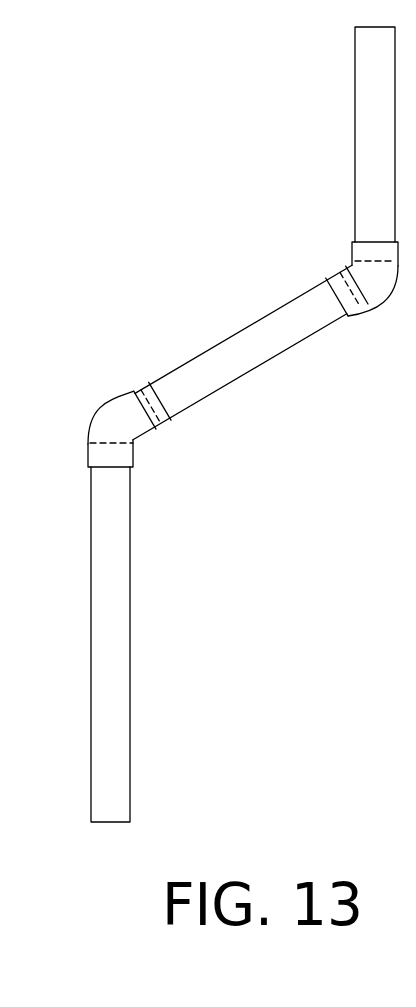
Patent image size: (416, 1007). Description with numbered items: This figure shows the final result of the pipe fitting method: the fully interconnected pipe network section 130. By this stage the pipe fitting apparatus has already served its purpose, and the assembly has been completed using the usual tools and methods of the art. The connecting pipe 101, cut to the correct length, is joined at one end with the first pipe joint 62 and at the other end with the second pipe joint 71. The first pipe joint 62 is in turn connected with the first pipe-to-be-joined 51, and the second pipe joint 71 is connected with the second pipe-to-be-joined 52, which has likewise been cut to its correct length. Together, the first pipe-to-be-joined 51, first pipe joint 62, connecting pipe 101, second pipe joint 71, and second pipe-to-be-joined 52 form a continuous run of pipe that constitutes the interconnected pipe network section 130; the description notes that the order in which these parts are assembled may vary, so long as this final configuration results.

The first pipe-to-be-joined 51 is at (113, 695).
The second pipe-to-be-joined 52 is at (372, 168).
The first pipe joint 62 is at (113, 423).
The second pipe joint 71 is at (360, 282).
The connecting pipe 101 is at (242, 352).
The interconnected pipe network section 130 is at (286, 433).